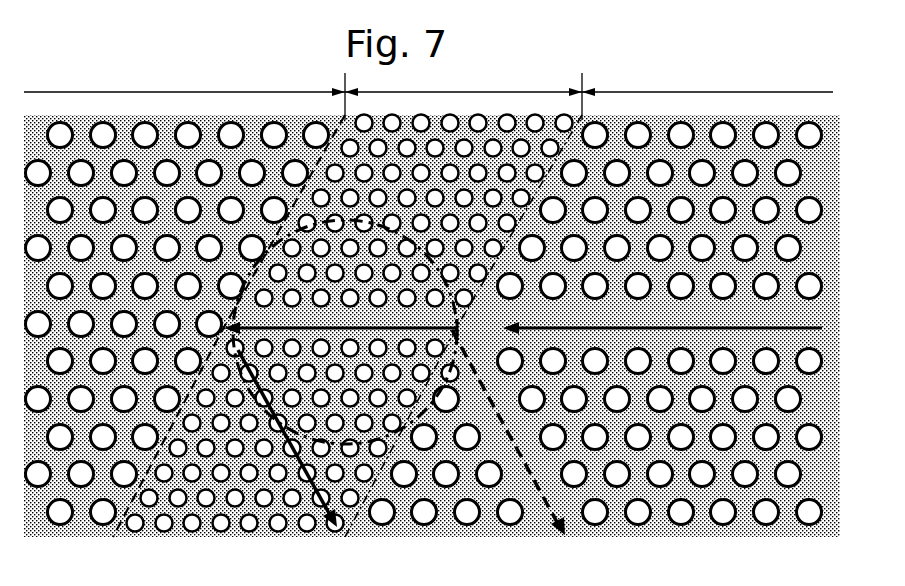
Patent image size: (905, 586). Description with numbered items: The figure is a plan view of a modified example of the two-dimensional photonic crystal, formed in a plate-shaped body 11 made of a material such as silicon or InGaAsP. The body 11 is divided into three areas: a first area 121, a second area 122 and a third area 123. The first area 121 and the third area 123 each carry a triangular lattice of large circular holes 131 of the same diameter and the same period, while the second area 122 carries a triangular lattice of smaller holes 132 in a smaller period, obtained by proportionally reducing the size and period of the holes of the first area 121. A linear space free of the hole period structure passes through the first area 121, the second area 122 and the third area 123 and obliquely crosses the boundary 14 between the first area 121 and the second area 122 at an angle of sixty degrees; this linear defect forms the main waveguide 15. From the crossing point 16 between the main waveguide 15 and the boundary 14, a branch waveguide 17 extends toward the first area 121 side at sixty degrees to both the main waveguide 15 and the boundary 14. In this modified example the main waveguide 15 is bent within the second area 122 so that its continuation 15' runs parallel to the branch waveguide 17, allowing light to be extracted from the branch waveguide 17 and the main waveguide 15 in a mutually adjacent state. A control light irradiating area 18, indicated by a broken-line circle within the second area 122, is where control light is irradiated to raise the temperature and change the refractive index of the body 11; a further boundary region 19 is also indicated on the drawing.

The plate-shaped body 11 is at (812, 175).
The boundary 14 is at (398, 445).
The main waveguide 15 is at (553, 293).
The deflected light propagation direction 15' is at (325, 458).
The crossing point 16 is at (457, 328).
The branch waveguide 17 is at (560, 493).
The control light irradiating area 18 is at (455, 505).
The boundary of small-hole region 19 is at (134, 494).
The first area 121 is at (707, 82).
The second area 122 is at (463, 94).
The third area 123 is at (184, 94).
The circular holes 131 is at (816, 430).
The holes 132 is at (253, 528).